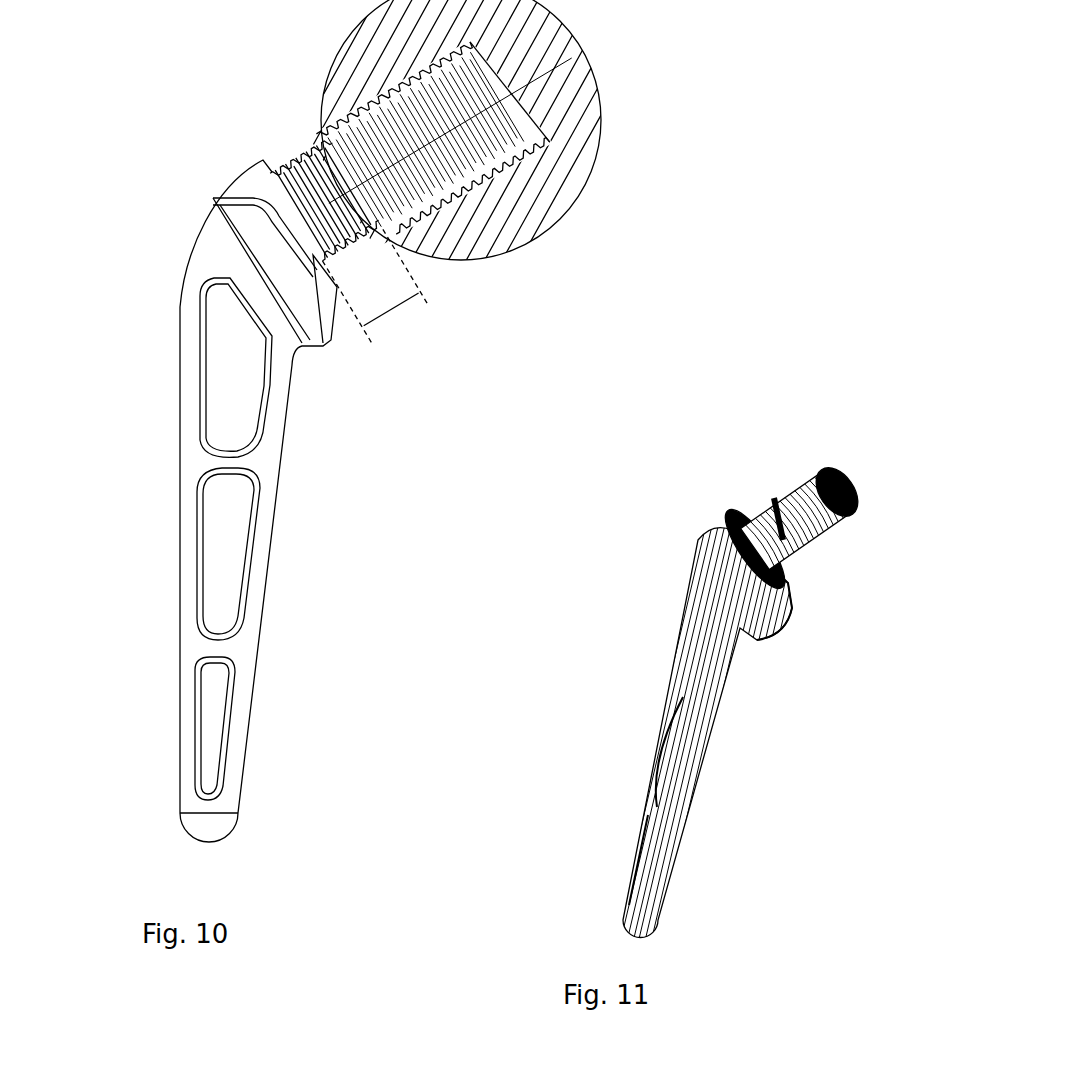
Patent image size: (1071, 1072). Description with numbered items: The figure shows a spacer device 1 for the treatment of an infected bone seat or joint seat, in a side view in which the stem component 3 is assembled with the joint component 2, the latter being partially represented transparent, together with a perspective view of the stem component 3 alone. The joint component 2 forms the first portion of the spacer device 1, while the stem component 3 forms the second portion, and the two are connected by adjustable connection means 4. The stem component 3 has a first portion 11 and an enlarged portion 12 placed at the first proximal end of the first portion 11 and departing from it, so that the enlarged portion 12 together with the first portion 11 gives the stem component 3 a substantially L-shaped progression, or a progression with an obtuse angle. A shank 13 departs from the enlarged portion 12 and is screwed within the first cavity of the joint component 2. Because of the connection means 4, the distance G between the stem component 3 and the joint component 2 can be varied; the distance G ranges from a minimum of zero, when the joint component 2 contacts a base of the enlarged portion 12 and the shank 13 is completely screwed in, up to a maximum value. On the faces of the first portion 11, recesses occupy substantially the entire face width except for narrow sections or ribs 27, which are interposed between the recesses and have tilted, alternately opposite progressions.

In FIG. 10, the spacer device 1 is at (148, 327).
In FIG. 10, the joint component 2 is at (612, 96).
In FIG. 10, the stem component 3 is at (302, 506).
In FIG. 10, the connection means 4 is at (265, 112).
In FIG. 10, the sections or ribs 27 is at (247, 287).
In FIG. 10, the distance G is at (402, 315).
In FIG. 11, the first portion 11 is at (625, 768).
In FIG. 11, the enlarged portion 12 is at (800, 624).
In FIG. 11, the shank 13 is at (838, 446).